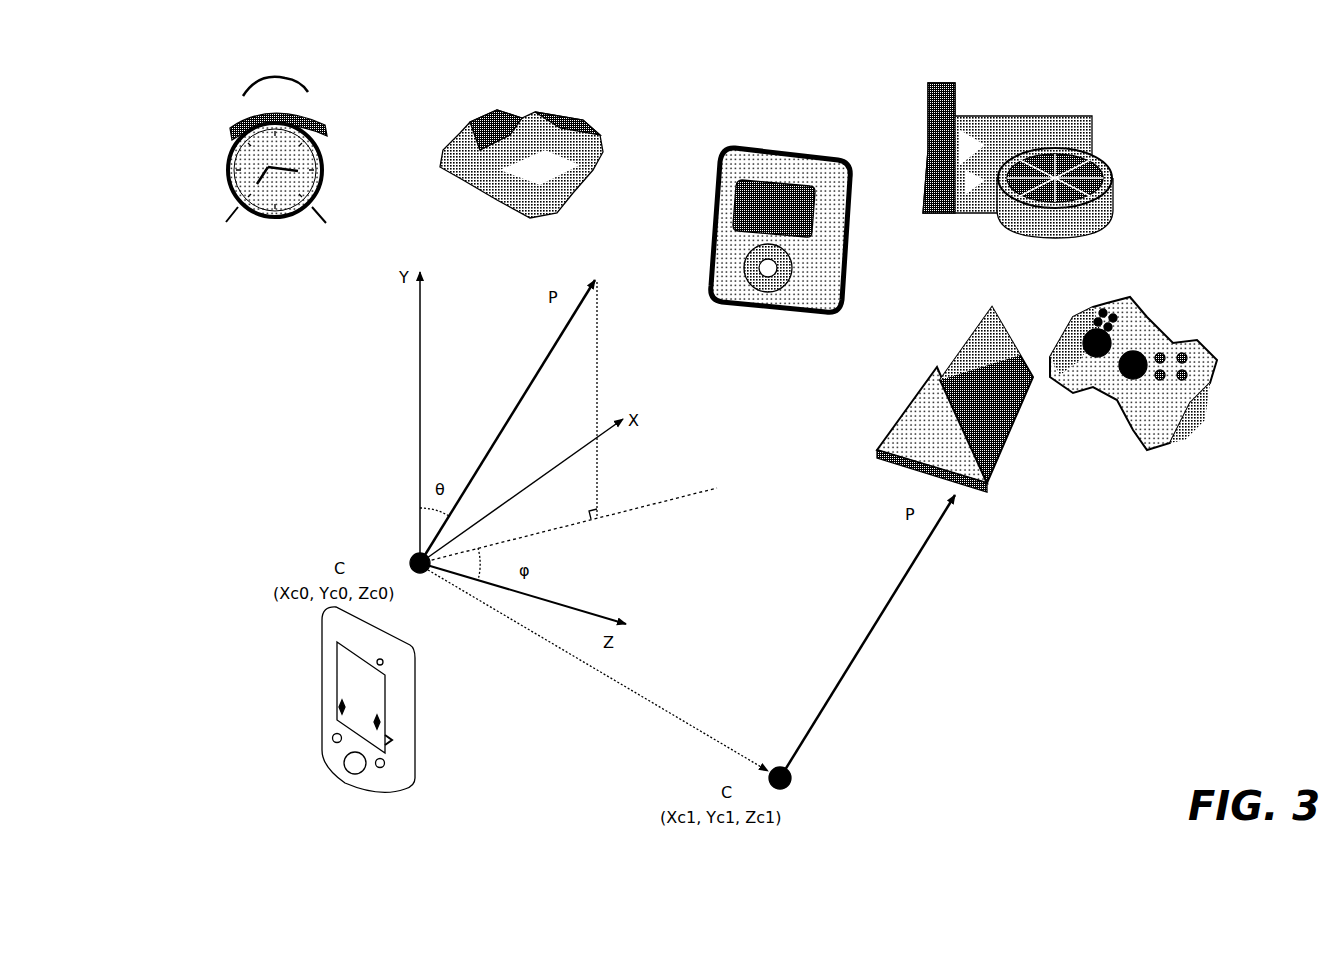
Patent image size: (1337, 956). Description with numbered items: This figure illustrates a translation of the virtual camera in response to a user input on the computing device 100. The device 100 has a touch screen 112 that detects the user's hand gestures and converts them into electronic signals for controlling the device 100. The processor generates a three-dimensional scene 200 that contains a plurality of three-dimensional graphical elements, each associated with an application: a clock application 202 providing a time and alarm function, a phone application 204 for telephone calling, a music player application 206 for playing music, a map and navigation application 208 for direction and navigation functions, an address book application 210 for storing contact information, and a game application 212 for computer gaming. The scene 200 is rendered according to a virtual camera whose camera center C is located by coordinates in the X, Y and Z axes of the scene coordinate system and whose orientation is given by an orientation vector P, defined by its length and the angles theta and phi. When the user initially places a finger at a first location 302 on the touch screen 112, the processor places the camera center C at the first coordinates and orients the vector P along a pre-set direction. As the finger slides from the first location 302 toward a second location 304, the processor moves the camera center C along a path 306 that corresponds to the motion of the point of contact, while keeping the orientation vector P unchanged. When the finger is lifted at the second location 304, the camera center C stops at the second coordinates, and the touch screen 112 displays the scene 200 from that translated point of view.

The computing device 100 is at (415, 683).
The touch screen 112 is at (391, 740).
The three-dimensional scene 200 is at (1149, 120).
The clock application 202 is at (239, 106).
The phone application 204 is at (467, 127).
The music player application 206 is at (732, 157).
The map and navigation application 208 is at (939, 93).
The address book application 210 is at (898, 417).
The game application 212 is at (1085, 303).
The first location 302 is at (331, 702).
The second location 304 is at (387, 717).
The path 306 is at (678, 728).